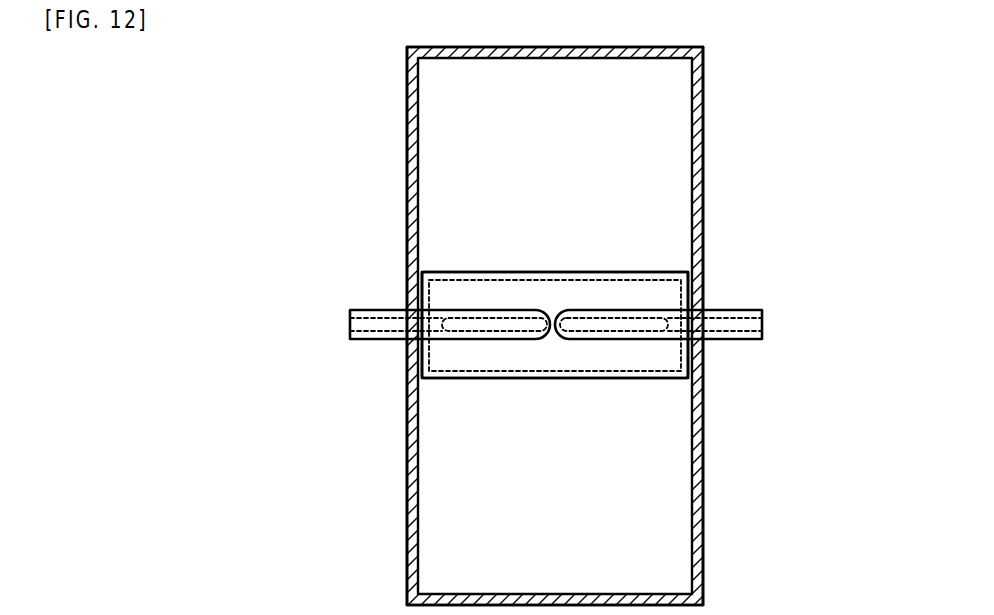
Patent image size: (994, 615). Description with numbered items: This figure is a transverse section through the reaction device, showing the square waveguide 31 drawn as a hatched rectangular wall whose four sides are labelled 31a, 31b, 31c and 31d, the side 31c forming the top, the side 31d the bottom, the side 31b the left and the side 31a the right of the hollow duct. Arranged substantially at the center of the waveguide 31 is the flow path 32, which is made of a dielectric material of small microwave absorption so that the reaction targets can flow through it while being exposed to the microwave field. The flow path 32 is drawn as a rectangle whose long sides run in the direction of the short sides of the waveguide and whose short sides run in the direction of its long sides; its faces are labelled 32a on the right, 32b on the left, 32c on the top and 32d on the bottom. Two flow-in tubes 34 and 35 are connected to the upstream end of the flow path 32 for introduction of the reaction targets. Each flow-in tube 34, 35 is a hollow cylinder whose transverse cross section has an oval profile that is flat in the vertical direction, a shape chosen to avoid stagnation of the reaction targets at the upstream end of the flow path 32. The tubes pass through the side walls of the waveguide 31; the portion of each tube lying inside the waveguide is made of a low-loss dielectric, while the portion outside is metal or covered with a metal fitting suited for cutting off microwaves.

The square waveguide 31 is at (713, 89).
The right wall of housing 31a is at (705, 176).
The left wall of housing 31b is at (407, 170).
The top wall of housing 31c is at (483, 59).
The bottom wall of housing 31d is at (625, 594).
The flow path 32 is at (615, 254).
The right face of block 32a is at (692, 283).
The left face of block 32b is at (424, 288).
The top face of block 32c is at (498, 272).
The bottom face of block 32d is at (517, 378).
The flow-in tube 34 is at (367, 340).
The flow-in tube 35 is at (730, 340).